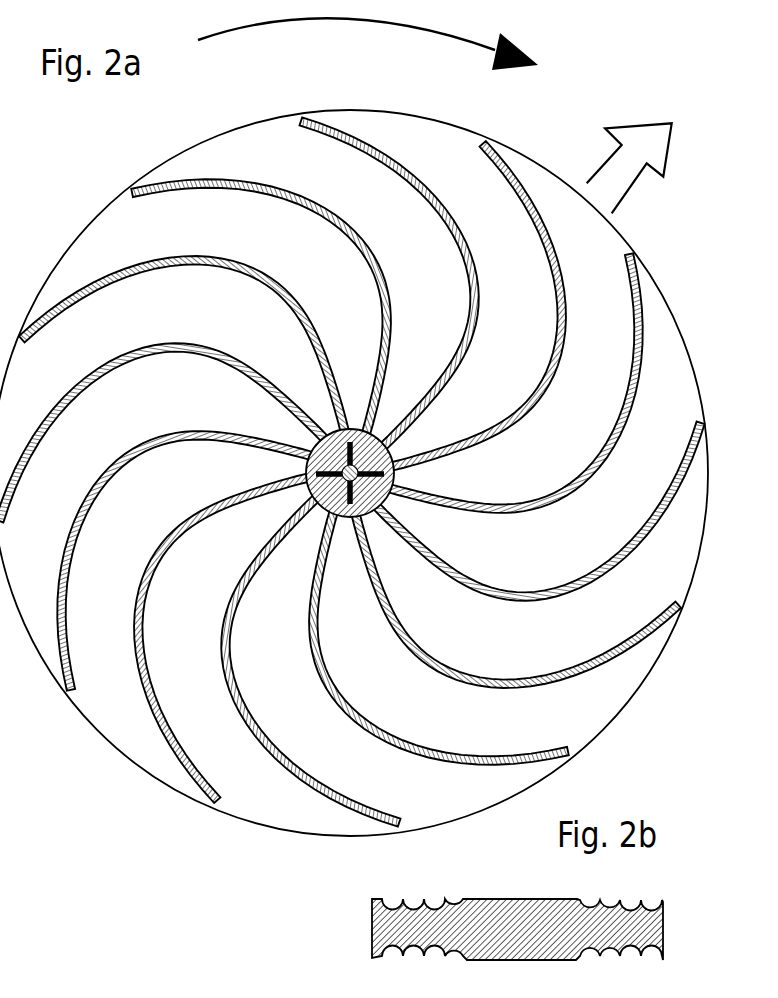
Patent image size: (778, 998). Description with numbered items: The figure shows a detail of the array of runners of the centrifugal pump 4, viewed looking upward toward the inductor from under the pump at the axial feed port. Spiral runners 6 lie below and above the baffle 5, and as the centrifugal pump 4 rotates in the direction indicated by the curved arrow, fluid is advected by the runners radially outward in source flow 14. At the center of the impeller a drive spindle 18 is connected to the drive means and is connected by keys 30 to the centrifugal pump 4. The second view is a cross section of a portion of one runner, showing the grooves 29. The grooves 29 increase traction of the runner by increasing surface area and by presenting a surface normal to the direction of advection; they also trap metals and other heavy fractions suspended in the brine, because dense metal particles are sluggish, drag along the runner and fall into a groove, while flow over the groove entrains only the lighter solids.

In FIG. 2A, the centrifugal pump 4 is at (84, 720).
In FIG. 2A, the baffle 5 is at (198, 715).
In FIG. 2A, the spiral runners 6 is at (375, 820).
In FIG. 2B, the spiral runners 6 is at (372, 910).
In FIG. 2A, the source flow 14 is at (643, 153).
In FIG. 2A, the drive spindle 18 is at (307, 467).
In FIG. 2B, the grooves 29 is at (453, 905).
In FIG. 2A, the keys 30 is at (347, 497).